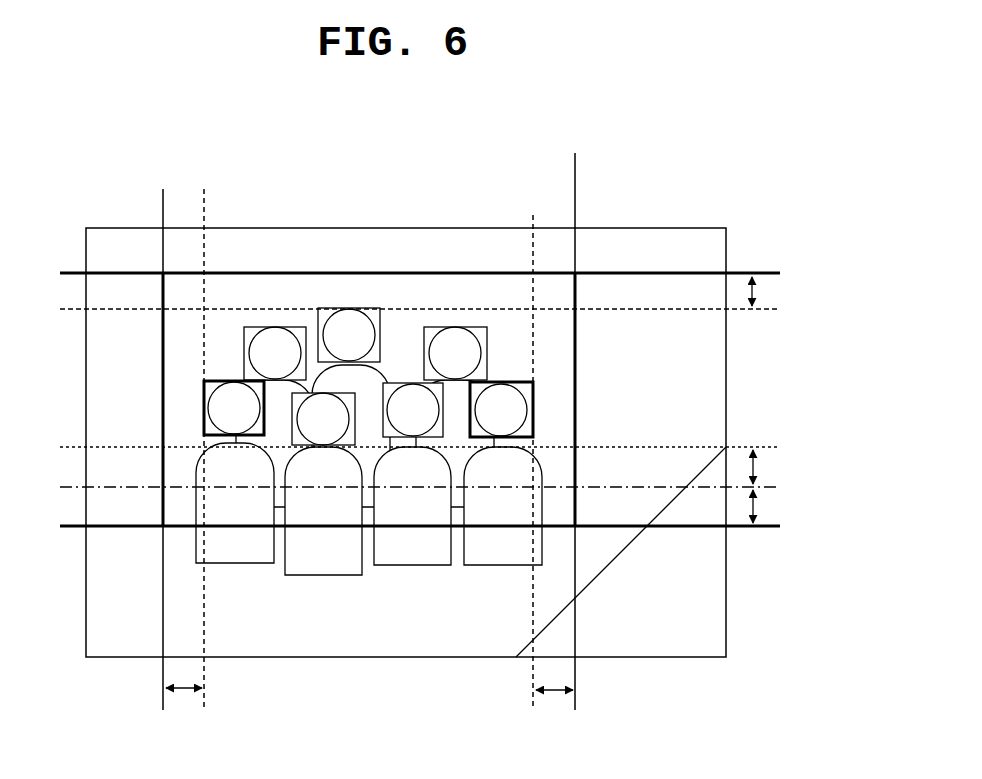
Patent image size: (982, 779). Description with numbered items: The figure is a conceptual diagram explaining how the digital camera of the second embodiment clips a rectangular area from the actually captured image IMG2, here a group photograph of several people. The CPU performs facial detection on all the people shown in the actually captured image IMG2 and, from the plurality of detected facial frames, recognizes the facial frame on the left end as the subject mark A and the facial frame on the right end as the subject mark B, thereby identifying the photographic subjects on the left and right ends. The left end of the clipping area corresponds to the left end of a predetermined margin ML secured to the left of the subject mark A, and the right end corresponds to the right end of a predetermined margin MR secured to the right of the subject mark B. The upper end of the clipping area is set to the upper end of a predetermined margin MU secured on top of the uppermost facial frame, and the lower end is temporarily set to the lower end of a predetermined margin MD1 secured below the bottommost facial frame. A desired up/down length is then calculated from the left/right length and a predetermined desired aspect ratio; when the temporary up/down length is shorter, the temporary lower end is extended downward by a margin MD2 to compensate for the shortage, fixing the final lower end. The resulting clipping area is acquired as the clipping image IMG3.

The subject mark A is at (228, 380).
The subject mark B is at (513, 381).
The actually captured image IMG2 is at (672, 227).
The clipping image IMG3 is at (395, 272).
The margin MU is at (760, 293).
The margin MD1 is at (760, 467).
The margin MD2 is at (760, 507).
The margin ML is at (188, 696).
The margin MR is at (557, 698).